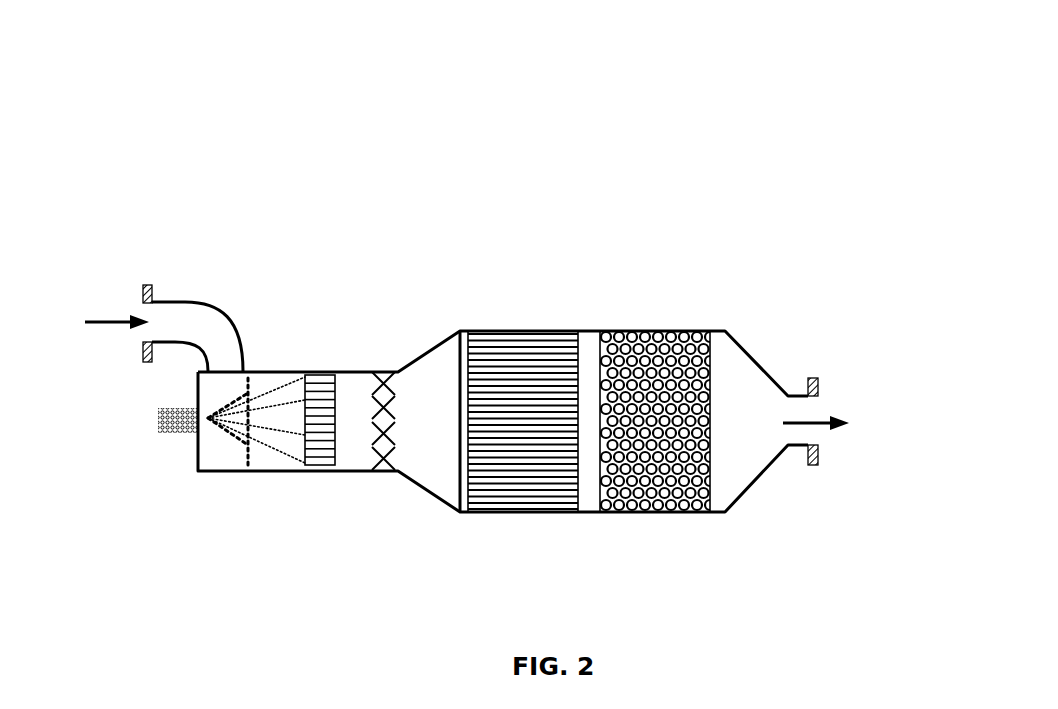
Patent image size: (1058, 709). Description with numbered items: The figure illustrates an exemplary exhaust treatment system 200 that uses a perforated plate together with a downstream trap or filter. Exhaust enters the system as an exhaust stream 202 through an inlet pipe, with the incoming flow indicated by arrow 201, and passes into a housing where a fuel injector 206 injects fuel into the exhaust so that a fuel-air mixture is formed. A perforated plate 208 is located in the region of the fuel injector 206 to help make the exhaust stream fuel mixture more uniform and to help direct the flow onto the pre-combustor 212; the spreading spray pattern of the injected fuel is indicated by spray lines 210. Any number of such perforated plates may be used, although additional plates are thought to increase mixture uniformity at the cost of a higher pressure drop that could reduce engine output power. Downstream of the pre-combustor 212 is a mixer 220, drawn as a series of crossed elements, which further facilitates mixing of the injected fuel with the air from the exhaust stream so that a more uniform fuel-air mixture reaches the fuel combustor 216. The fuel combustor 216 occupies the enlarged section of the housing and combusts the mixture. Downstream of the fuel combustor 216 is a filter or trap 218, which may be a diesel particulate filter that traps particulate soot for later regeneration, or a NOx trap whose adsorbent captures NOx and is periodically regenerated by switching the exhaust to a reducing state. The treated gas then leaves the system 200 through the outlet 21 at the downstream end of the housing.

The system 200 is at (543, 138).
The exhaust gas inlet flow 201 is at (95, 321).
The exhaust stream 202 is at (203, 330).
The fuel injector 206 is at (173, 433).
The perforated plate 208 is at (235, 443).
The spray plume lines 210 is at (290, 438).
The pre-combustor 212 is at (320, 397).
The fuel combustor 216 is at (522, 365).
The filter or trap 218 is at (655, 387).
The mixer 220 is at (386, 462).
The outlet 21 is at (800, 420).